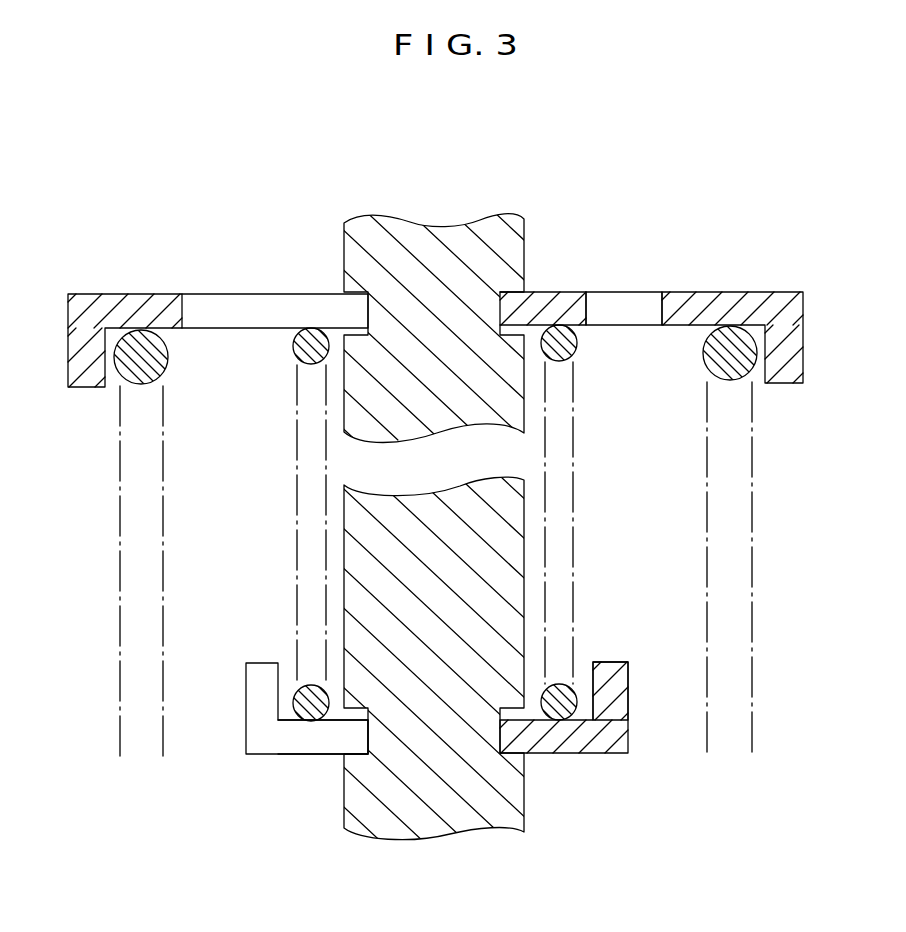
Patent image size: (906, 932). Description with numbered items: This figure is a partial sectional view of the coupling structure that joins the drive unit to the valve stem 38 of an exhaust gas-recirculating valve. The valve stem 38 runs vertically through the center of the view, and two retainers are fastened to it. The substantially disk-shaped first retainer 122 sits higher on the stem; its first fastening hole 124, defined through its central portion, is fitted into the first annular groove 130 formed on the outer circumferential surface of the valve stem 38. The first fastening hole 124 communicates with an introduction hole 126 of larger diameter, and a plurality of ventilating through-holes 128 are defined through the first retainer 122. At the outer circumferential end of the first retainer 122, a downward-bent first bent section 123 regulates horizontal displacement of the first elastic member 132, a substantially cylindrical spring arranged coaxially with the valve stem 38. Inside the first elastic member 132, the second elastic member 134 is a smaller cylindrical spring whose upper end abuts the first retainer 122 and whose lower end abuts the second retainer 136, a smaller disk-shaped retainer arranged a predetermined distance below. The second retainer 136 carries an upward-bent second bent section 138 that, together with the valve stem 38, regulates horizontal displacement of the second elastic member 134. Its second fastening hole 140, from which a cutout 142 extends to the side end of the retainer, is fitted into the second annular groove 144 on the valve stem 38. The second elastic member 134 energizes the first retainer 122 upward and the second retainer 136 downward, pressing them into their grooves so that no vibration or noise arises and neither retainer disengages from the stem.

The valve stem 38 is at (447, 492).
The first retainer 122 is at (668, 292).
The first bent section 123 is at (83, 387).
The first fastening hole 124 is at (493, 302).
The introduction hole 126 is at (128, 337).
The ventilating through-holes 128 is at (617, 303).
The first annular groove 130 is at (365, 311).
The first elastic member 132 is at (748, 368).
The second elastic member 134 is at (580, 365).
The second retainer 136 is at (571, 707).
The second bent section 138 is at (610, 662).
The second fastening hole 140 is at (500, 740).
The cutout 142 is at (268, 765).
The second annular groove 144 is at (367, 737).